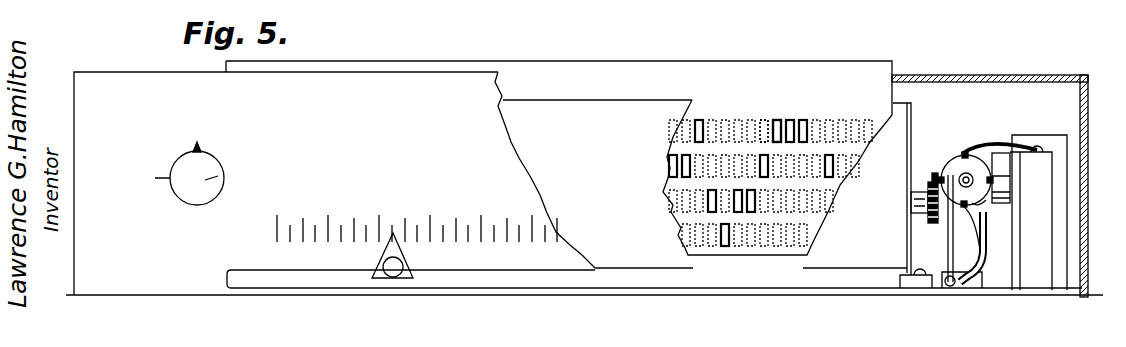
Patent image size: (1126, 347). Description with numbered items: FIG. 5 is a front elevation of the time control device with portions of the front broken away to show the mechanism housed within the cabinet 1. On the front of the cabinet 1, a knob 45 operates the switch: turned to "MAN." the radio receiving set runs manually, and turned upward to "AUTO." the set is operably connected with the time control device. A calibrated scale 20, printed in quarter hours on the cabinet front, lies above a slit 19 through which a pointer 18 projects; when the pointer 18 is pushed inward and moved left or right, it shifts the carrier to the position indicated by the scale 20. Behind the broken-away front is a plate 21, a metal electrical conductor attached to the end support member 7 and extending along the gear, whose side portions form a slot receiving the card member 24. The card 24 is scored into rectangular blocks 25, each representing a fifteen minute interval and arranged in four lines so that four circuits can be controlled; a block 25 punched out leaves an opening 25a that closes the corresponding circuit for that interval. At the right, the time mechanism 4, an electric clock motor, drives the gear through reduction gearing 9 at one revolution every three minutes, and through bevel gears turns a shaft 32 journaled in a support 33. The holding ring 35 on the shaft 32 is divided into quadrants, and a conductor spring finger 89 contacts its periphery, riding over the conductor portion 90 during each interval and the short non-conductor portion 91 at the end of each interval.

The cabinet 1 is at (985, 77).
The time mechanism 4 is at (1060, 142).
The support member 7 is at (908, 108).
The reduction gearing 9 is at (934, 173).
The pointer 18 is at (395, 268).
The slit 19 is at (232, 278).
The calibrated scale 20 is at (405, 230).
The plate 21 is at (615, 108).
The card member 24 is at (743, 68).
The rectangular block 25 is at (763, 118).
The opening 25a is at (777, 120).
The shaft 32 is at (967, 185).
The support 33 is at (973, 235).
The holding ring 35 is at (952, 160).
The knob 45 is at (216, 177).
The conductor spring finger 89 is at (987, 148).
The conductor portion 90 is at (980, 202).
The non-conductor portion 91 is at (979, 213).